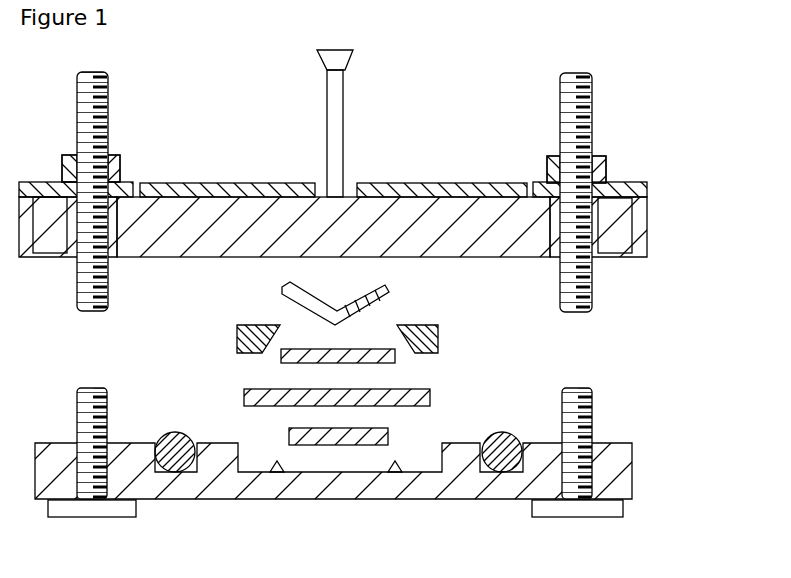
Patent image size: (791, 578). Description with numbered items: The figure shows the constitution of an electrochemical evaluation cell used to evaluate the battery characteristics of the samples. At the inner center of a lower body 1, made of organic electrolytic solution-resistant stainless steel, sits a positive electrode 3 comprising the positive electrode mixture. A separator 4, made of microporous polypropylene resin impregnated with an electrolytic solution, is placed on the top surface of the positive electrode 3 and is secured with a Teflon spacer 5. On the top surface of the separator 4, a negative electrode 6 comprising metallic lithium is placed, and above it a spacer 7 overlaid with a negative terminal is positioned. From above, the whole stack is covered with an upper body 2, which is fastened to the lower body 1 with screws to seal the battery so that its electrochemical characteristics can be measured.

The lower body 1 is at (203, 488).
The upper body 2 is at (448, 200).
The positive electrode 3 is at (288, 438).
The separator 4 is at (430, 399).
The Teflon spacer 5 is at (440, 333).
The negative electrode 6 is at (395, 357).
The spacer 7 is at (398, 289).